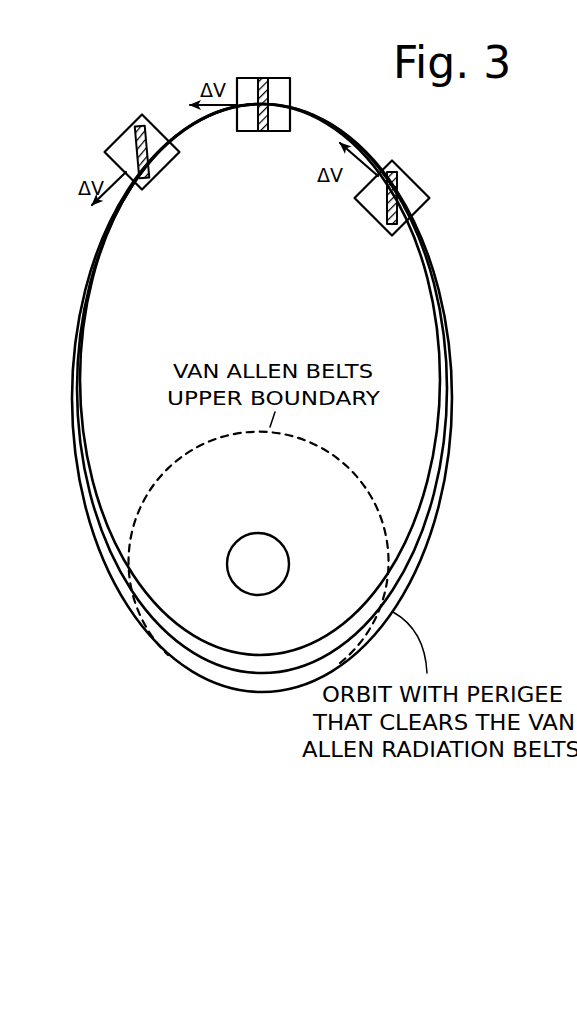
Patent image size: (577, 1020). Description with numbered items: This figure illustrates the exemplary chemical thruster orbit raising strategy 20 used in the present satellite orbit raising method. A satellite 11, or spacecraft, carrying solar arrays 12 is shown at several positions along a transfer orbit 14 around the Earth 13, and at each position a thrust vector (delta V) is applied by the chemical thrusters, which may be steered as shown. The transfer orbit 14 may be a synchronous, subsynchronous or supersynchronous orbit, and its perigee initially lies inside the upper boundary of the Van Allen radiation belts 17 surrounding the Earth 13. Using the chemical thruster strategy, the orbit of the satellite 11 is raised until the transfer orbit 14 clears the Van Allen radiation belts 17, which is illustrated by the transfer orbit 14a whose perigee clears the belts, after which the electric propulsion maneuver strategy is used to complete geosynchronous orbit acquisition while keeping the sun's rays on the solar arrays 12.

The satellite 11 is at (290, 90).
The solar arrays 12 is at (259, 118).
The Earth 13 is at (258, 549).
The transfer orbit 14 is at (79, 375).
The transfer orbit clearing the Van Allen radiation belts 14a is at (408, 580).
The Van Allen radiation belts 17 is at (172, 459).
The orbit raising scheme 20 is at (490, 182).